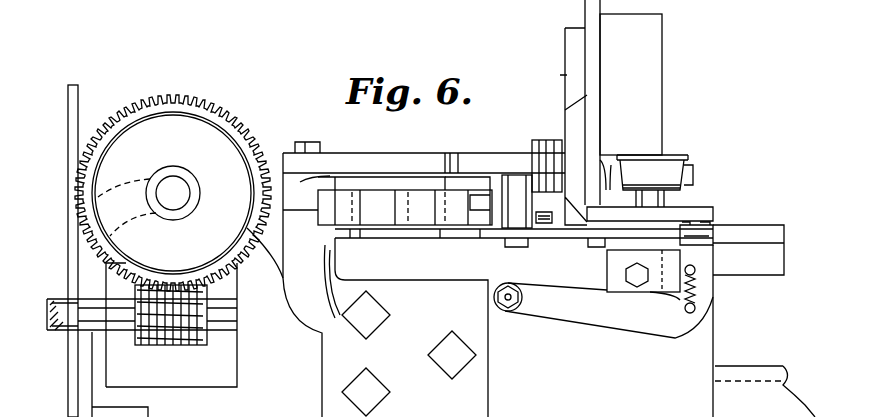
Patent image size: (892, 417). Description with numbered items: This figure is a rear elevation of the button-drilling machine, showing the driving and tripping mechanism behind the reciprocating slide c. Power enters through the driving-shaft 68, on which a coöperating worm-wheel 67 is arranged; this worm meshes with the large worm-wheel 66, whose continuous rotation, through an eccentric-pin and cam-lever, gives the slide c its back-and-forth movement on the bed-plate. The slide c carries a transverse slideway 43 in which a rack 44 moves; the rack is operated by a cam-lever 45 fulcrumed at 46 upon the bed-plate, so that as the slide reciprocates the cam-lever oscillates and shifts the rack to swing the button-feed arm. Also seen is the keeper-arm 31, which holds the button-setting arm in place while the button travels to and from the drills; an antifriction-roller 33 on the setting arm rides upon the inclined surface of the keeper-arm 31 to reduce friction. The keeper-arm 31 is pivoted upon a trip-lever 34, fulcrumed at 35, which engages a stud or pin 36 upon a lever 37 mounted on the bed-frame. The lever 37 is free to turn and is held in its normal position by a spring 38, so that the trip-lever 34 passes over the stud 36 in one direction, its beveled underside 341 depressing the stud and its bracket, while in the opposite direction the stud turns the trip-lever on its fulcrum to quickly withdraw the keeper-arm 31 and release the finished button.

The worm-wheel 66 is at (207, 104).
The coöperating worm-wheel 67 is at (166, 348).
The driving-shaft 68 is at (47, 318).
The fulcrum 46 is at (303, 144).
The keeper-arm 31 is at (512, 185).
The antifriction-roller 33 is at (405, 225).
The trip-lever 34 is at (556, 235).
The fulcrum 35 is at (593, 246).
The stud or pin 36 is at (700, 223).
The lever 37 is at (603, 294).
The spring 38 is at (697, 281).
The beveled portion 341 is at (736, 234).
The transverse slideway 43 is at (565, 75).
The rack 44 is at (573, 126).
The cam-lever 45 is at (518, 160).
The slide C is at (746, 262).